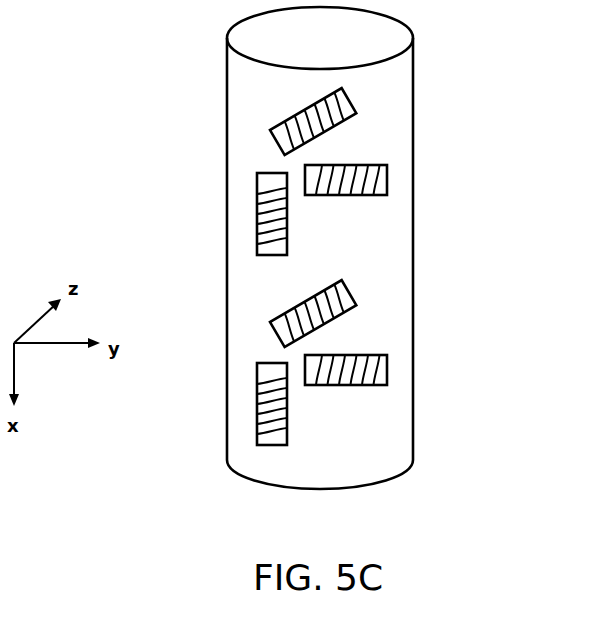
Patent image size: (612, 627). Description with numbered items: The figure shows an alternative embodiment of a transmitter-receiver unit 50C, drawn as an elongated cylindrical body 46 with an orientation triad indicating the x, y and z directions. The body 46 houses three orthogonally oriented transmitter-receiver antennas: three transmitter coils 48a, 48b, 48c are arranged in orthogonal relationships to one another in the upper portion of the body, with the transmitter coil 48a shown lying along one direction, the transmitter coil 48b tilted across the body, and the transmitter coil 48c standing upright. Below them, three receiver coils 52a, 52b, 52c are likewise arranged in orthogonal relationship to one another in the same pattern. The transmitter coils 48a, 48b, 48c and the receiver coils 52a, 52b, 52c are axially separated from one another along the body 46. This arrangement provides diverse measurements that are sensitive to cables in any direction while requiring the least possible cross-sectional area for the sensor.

The transmitter-receiver unit 50C is at (194, 36).
The cylindrical body 46 is at (413, 81).
The transmitter coil 48a is at (387, 180).
The transmitter coil 48b is at (272, 128).
The transmitter coil 48c is at (257, 212).
The receiver coil 52a is at (387, 372).
The receiver coil 52b is at (274, 320).
The receiver coil 52c is at (257, 403).